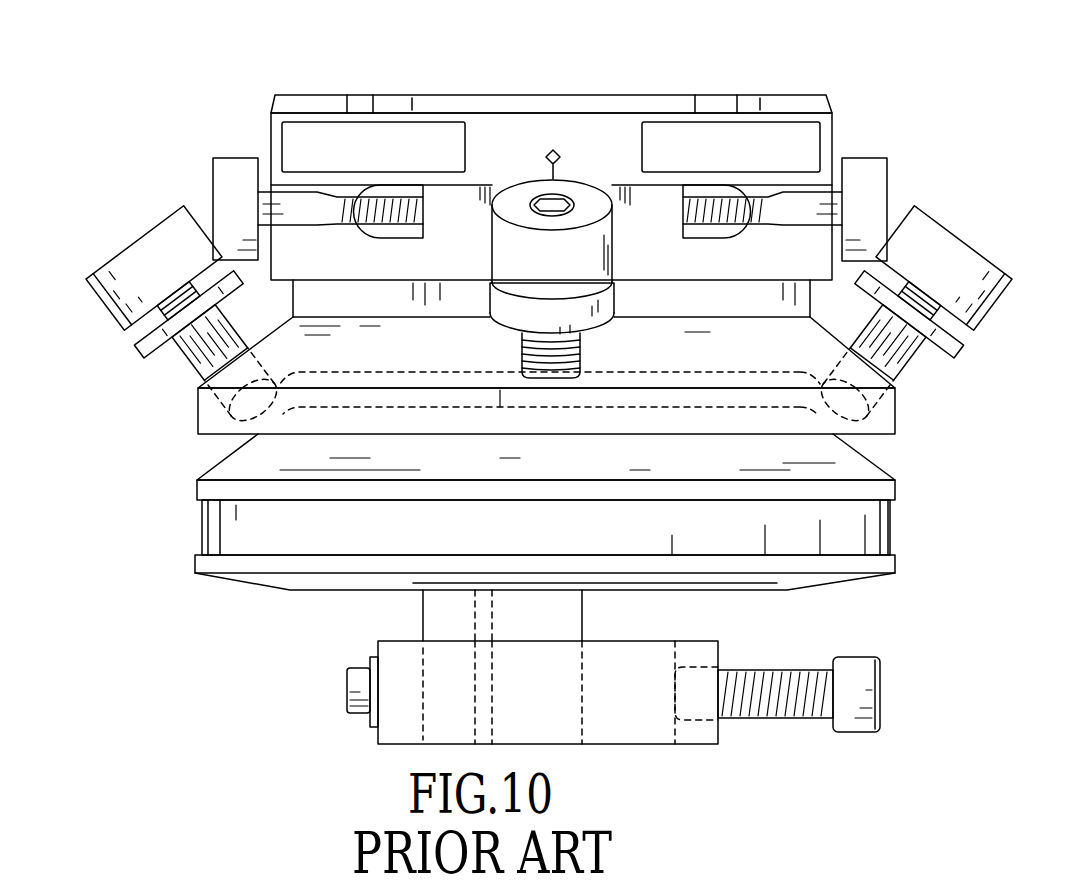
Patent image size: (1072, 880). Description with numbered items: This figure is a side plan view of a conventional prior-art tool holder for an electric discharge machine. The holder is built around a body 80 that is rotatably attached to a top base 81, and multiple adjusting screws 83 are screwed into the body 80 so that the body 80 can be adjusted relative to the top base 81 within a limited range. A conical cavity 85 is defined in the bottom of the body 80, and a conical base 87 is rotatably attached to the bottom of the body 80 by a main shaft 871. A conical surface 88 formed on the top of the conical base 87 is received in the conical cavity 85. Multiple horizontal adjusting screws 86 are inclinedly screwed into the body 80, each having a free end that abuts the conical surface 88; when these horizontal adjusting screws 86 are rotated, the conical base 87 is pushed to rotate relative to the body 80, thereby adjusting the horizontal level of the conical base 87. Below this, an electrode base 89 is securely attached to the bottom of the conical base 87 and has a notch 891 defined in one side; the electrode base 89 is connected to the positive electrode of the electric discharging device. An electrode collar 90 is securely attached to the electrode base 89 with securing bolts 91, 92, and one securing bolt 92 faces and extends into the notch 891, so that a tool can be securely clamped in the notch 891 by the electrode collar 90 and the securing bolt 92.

The body 80 is at (464, 207).
The top base 81 is at (603, 132).
The adjusting screws 83 is at (233, 178).
The conical cavity 85 is at (882, 420).
The horizontal adjusting screws 86 is at (963, 262).
The conical base 87 is at (872, 530).
The main shaft 871 is at (627, 398).
The conical surface 88 is at (850, 465).
The electrode base 89 is at (443, 612).
The notch 891 is at (552, 615).
The electrode collar 90 is at (630, 728).
The securing bolt 91 is at (357, 690).
The securing bolt 92 is at (862, 698).